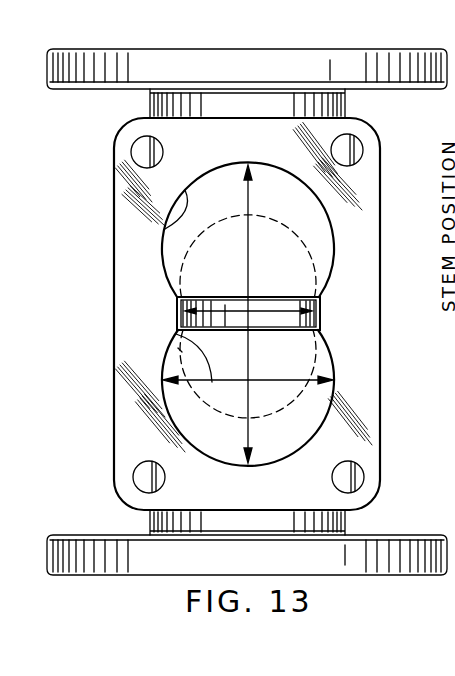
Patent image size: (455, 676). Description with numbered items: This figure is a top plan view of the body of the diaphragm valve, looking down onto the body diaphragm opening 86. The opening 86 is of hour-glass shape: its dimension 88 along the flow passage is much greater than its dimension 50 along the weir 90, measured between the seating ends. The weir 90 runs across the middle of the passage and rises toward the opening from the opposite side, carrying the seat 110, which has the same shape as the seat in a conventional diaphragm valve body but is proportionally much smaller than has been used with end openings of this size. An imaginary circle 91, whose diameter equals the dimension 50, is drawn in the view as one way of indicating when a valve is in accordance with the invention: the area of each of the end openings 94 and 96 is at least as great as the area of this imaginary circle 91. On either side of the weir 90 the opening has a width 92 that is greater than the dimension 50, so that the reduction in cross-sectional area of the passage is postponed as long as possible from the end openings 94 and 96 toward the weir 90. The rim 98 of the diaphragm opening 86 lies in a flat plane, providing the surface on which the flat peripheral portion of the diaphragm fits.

The dimension along the weir 50 is at (272, 313).
The body diaphragm opening 86 is at (163, 228).
The dimension along the flow passage 88 is at (247, 225).
The weir 90 is at (178, 348).
The imaginary circle 91 is at (264, 245).
The width of the opening on either side of the weir 92 is at (212, 382).
The end opening 94 is at (203, 50).
The end opening 96 is at (112, 576).
The rim of the diaphragm opening 98 is at (348, 267).
The seat 110 is at (225, 305).